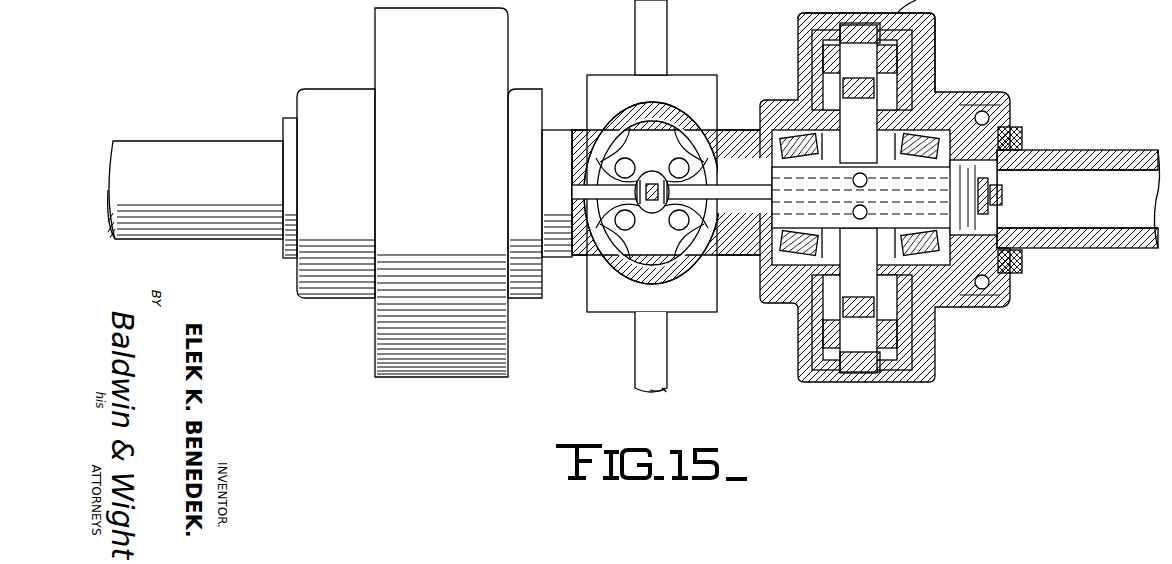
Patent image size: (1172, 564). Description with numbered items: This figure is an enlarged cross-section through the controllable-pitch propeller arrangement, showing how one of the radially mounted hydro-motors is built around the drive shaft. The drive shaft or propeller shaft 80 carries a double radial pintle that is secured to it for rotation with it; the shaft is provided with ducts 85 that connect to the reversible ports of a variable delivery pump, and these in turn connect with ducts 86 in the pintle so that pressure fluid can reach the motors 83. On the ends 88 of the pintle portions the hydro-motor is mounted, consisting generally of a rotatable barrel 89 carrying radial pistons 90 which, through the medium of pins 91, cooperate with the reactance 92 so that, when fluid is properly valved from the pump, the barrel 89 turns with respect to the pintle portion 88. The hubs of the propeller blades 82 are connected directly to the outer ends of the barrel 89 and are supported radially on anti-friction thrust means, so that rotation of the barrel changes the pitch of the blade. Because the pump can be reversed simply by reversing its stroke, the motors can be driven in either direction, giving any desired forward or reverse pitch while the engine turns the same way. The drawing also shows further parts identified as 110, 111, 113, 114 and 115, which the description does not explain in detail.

The drive shaft 80 is at (622, 152).
The propeller blades 82 is at (206, 140).
The motors 83 is at (373, 33).
The ducts 85 is at (722, 131).
The ducts 86 is at (592, 160).
The pintle portion ends 88 is at (873, 197).
The rotatable barrel 89 is at (940, 101).
The radial pistons 90 is at (860, 198).
The pins 91 is at (884, 58).
The reactance 92 is at (902, 43).
The lever bar 110 is at (612, 268).
The ball 111 is at (678, 160).
The nut 113 is at (1004, 205).
The washer 114 is at (1004, 189).
The bolt 115 is at (986, 103).